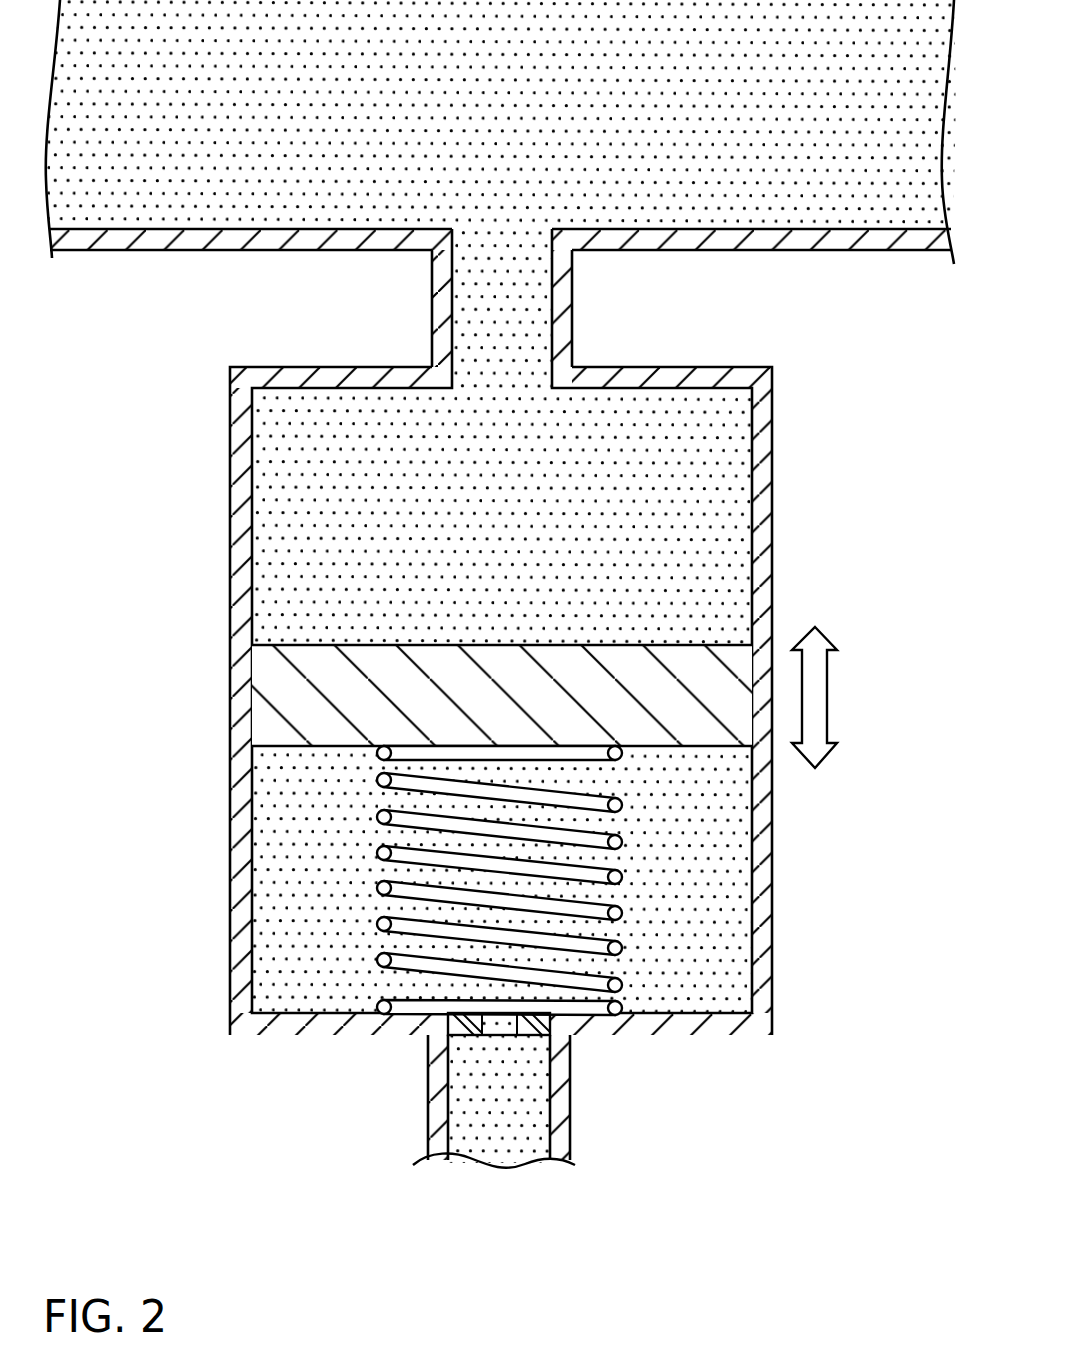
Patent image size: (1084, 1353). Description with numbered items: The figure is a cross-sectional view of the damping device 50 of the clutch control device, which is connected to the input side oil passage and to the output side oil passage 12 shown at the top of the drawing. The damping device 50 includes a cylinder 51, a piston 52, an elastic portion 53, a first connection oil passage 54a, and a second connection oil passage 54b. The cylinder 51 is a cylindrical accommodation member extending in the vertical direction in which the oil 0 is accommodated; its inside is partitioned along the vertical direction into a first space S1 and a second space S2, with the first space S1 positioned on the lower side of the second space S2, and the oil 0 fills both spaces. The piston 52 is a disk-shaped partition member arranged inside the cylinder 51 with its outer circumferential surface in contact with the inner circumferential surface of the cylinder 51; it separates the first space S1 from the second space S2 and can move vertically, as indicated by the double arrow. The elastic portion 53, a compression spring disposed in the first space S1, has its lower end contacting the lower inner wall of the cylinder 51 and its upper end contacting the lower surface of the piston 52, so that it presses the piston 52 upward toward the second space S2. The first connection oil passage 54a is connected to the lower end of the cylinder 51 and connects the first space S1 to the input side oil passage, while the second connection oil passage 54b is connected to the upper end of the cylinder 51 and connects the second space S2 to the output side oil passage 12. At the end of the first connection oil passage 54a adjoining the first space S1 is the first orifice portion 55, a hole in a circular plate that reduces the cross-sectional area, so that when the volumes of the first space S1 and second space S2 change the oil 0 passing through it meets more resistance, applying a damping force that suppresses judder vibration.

The output side oil passage 12 is at (165, 241).
The damping device 50 is at (580, 698).
The cylinder 51 is at (765, 487).
The piston 52 is at (698, 735).
The elastic portion 53 is at (588, 942).
The first connection oil passage 54a is at (562, 1142).
The second connection oil passage 54b is at (565, 299).
The first orifice portion 55 is at (514, 1040).
The first space S1 is at (735, 905).
The second space S2 is at (735, 561).
The oil 0 is at (290, 514).